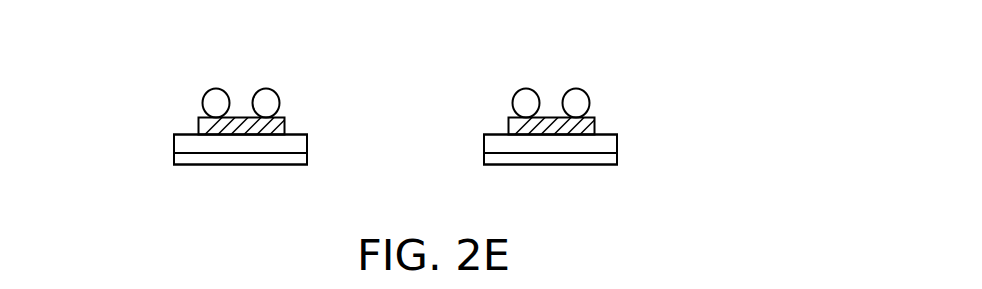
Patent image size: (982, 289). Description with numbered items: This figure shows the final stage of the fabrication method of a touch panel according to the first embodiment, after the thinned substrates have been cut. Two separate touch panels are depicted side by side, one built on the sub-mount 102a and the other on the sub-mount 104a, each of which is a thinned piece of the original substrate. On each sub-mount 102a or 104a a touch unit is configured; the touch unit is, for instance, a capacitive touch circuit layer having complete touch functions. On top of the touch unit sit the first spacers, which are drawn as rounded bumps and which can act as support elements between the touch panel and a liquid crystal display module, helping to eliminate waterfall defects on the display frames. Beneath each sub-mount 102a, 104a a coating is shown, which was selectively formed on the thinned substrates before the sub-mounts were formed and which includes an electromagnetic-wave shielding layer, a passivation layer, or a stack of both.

The sub-mount 102a is at (303, 140).
The sub-mount 104a is at (612, 142).